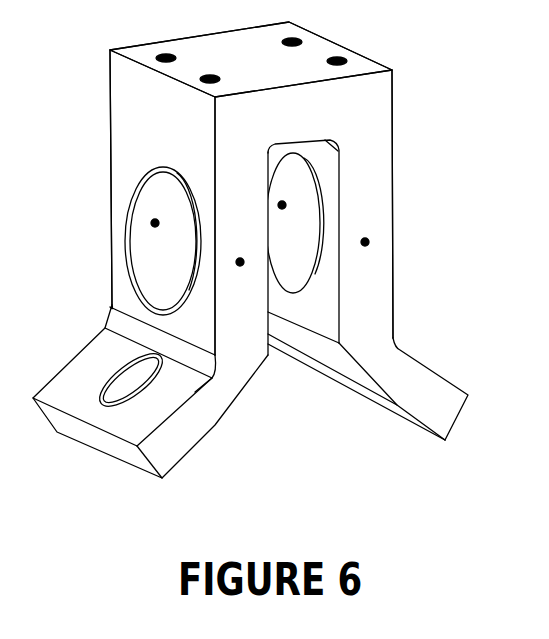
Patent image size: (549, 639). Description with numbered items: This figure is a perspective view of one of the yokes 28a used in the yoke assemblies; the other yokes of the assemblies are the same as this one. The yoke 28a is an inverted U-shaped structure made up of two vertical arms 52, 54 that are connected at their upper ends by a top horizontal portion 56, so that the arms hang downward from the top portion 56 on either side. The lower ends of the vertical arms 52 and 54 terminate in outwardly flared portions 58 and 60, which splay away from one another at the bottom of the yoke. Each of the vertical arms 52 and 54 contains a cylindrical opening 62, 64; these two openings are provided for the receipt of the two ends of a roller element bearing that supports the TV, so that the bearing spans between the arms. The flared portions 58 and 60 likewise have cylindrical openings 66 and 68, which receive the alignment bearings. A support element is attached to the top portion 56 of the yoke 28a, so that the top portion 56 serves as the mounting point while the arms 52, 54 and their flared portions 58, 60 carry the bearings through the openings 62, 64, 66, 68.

The yoke 28a is at (393, 88).
The vertical arm 52 is at (253, 213).
The vertical arm 54 is at (377, 195).
The top horizontal portion 56 is at (263, 65).
The outwardly flared portion 58 is at (210, 436).
The outwardly flared portion 60 is at (435, 400).
The cylindrical opening 62 is at (178, 265).
The cylindrical opening 64 is at (300, 248).
The cylindrical opening 66 is at (139, 386).
The cylindrical opening 68 is at (359, 382).